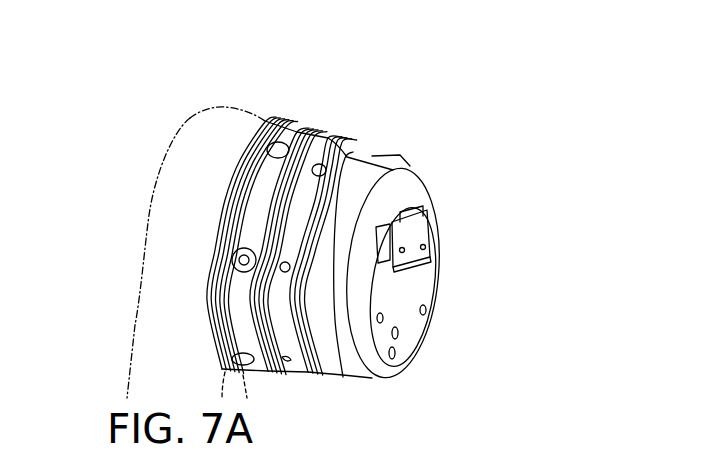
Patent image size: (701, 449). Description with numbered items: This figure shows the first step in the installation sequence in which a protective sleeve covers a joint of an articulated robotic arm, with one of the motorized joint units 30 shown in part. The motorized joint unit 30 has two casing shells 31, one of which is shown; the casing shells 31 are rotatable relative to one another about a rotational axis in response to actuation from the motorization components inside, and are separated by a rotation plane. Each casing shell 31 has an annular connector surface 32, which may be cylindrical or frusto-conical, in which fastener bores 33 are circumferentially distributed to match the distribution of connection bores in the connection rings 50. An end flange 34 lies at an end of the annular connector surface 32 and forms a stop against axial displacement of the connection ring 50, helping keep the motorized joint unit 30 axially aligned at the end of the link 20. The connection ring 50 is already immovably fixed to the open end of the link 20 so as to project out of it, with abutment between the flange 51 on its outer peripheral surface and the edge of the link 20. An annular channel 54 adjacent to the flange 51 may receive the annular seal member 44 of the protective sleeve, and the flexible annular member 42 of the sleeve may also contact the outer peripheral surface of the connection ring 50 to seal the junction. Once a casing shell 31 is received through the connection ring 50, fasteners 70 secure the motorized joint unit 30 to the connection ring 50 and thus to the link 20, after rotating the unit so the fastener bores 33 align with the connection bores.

The link 20 is at (155, 277).
The motorized joint unit 30 is at (443, 291).
The casing shell 31 is at (412, 167).
The annular connector surface 32 is at (346, 149).
The fastener bore 33 is at (322, 175).
The end flange 34 is at (280, 372).
The flexible annular member 42 is at (382, 431).
The annular seal member 44 is at (322, 430).
The connection ring 50 is at (306, 138).
The flange 51 is at (266, 120).
The annular channel 54 is at (284, 121).
The fastener 70 is at (226, 219).